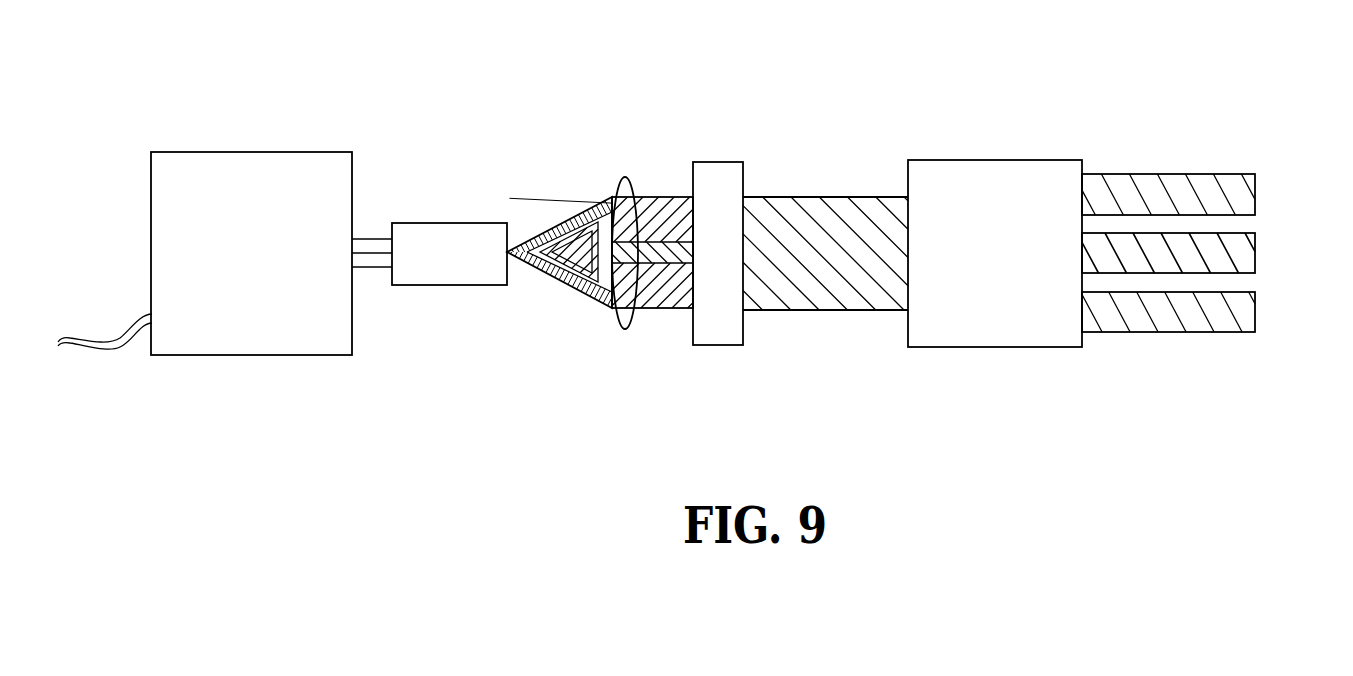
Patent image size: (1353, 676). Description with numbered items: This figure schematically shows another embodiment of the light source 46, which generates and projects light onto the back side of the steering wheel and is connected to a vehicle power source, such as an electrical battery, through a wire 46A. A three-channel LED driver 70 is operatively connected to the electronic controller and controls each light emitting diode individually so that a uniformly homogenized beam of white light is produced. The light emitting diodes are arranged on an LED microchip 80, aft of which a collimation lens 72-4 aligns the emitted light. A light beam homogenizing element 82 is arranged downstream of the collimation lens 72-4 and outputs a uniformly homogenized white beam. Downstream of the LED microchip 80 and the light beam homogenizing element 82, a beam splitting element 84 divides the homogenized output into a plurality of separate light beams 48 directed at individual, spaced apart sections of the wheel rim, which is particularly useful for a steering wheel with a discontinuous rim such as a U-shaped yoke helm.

The light source 46 is at (1258, 127).
The wire 46A is at (110, 350).
The light beam 48 is at (1255, 195).
The 3-channel LED driver 70 is at (247, 355).
The collimation lens 72-4 is at (622, 330).
The LED microchip 80 is at (448, 285).
The light beam homogenizing element 82 is at (718, 345).
The beam splitting element 84 is at (995, 347).